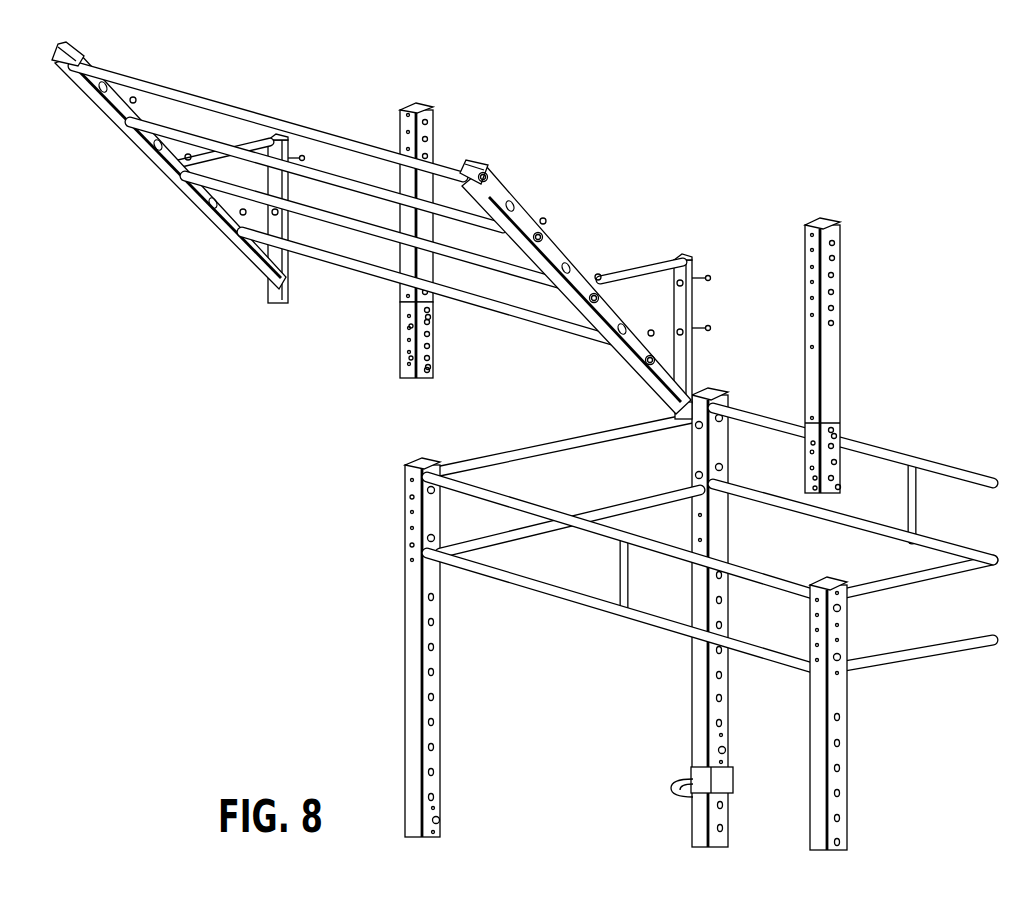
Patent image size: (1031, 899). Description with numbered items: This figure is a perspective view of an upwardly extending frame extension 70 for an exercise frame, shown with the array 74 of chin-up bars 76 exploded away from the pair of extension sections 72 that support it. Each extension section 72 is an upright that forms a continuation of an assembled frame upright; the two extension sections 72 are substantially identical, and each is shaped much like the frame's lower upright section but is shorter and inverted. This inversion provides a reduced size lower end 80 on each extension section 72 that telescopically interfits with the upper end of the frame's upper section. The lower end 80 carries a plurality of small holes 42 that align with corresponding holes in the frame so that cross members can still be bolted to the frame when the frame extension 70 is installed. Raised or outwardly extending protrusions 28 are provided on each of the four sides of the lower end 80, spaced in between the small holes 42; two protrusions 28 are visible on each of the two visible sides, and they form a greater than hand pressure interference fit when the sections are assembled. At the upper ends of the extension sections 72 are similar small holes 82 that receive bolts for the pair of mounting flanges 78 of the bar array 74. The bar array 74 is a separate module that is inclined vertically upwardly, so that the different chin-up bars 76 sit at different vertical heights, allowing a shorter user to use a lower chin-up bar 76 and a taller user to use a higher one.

The protrusions 28 is at (410, 325).
The small holes 42 is at (835, 462).
The frame extension 70 is at (688, 190).
The extension section 72 is at (428, 115).
The array of chin-up bars 74 is at (540, 190).
The chin-up bars 76 is at (223, 143).
The mounting flanges 78 is at (684, 302).
The lower end 80 is at (393, 338).
The small holes 82 is at (834, 258).